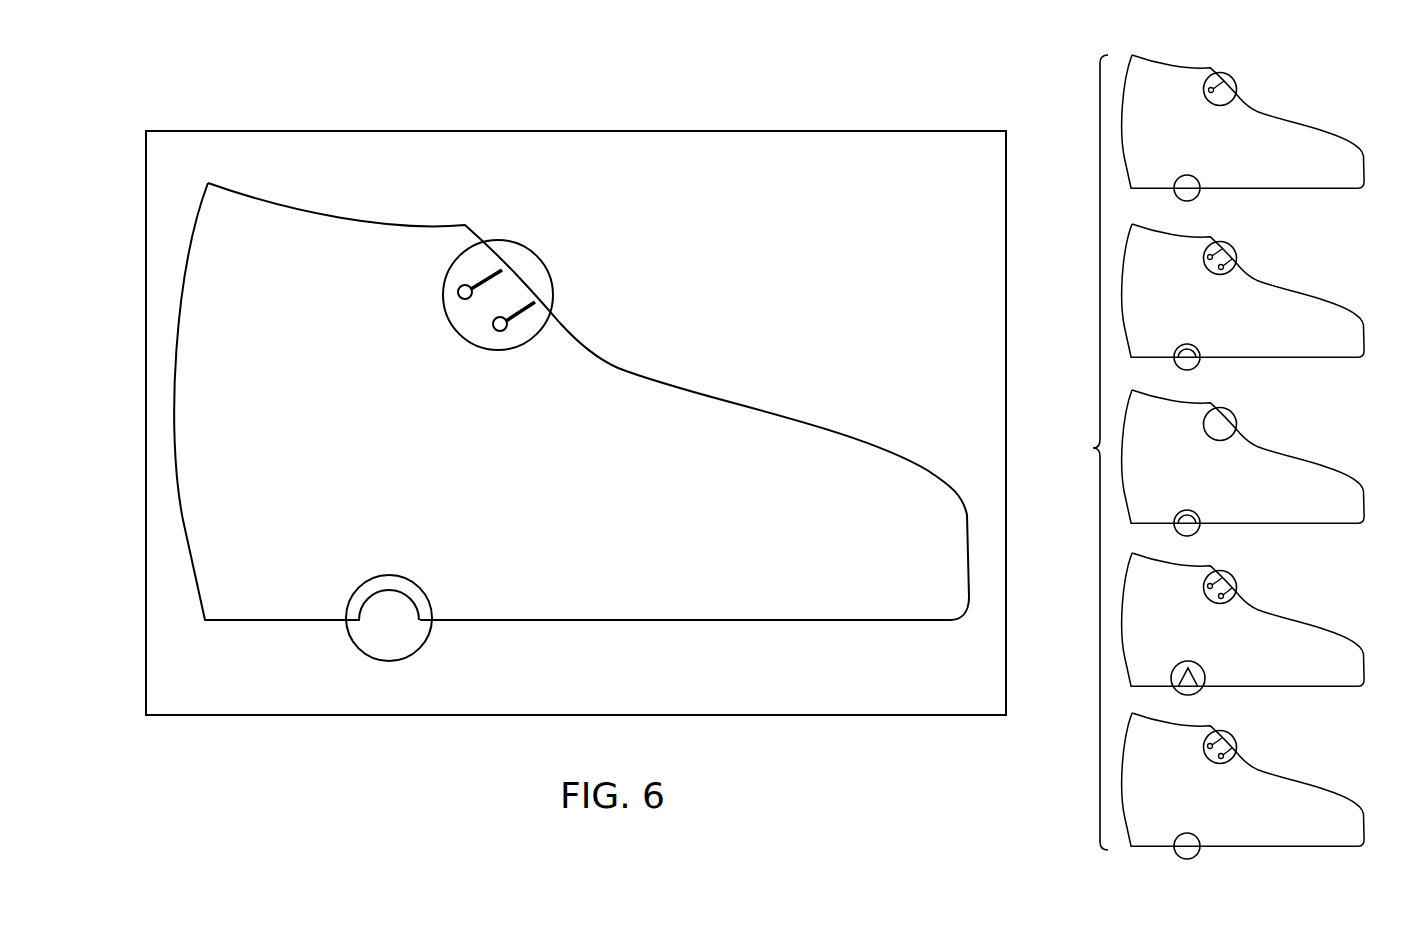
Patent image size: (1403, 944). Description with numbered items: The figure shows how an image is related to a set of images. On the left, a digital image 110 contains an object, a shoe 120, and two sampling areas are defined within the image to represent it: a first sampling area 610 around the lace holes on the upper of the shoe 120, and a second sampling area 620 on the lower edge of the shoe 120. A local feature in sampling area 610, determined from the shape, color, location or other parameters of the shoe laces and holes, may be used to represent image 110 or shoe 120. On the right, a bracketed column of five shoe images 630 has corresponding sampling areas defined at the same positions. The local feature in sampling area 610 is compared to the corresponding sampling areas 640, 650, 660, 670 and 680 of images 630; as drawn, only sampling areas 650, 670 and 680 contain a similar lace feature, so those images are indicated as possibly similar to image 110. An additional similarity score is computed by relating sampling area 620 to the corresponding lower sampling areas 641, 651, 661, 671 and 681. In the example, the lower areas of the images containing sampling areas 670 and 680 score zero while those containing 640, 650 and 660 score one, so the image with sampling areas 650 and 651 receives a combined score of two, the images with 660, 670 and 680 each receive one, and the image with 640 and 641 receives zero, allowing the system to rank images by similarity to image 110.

The digital image 110 is at (913, 715).
The shoe 120 is at (618, 368).
The sampling area 610 is at (512, 240).
The sampling area 620 is at (412, 652).
The images 630 is at (1203, 465).
The sampling area 640 is at (1237, 87).
The sampling area 641 is at (1198, 196).
The sampling area 650 is at (1237, 256).
The sampling area 651 is at (1198, 365).
The sampling area 660 is at (1237, 422).
The sampling area 661 is at (1198, 531).
The sampling area 670 is at (1237, 585).
The sampling area 671 is at (1202, 691).
The sampling area 680 is at (1237, 745).
The sampling area 681 is at (1198, 854).